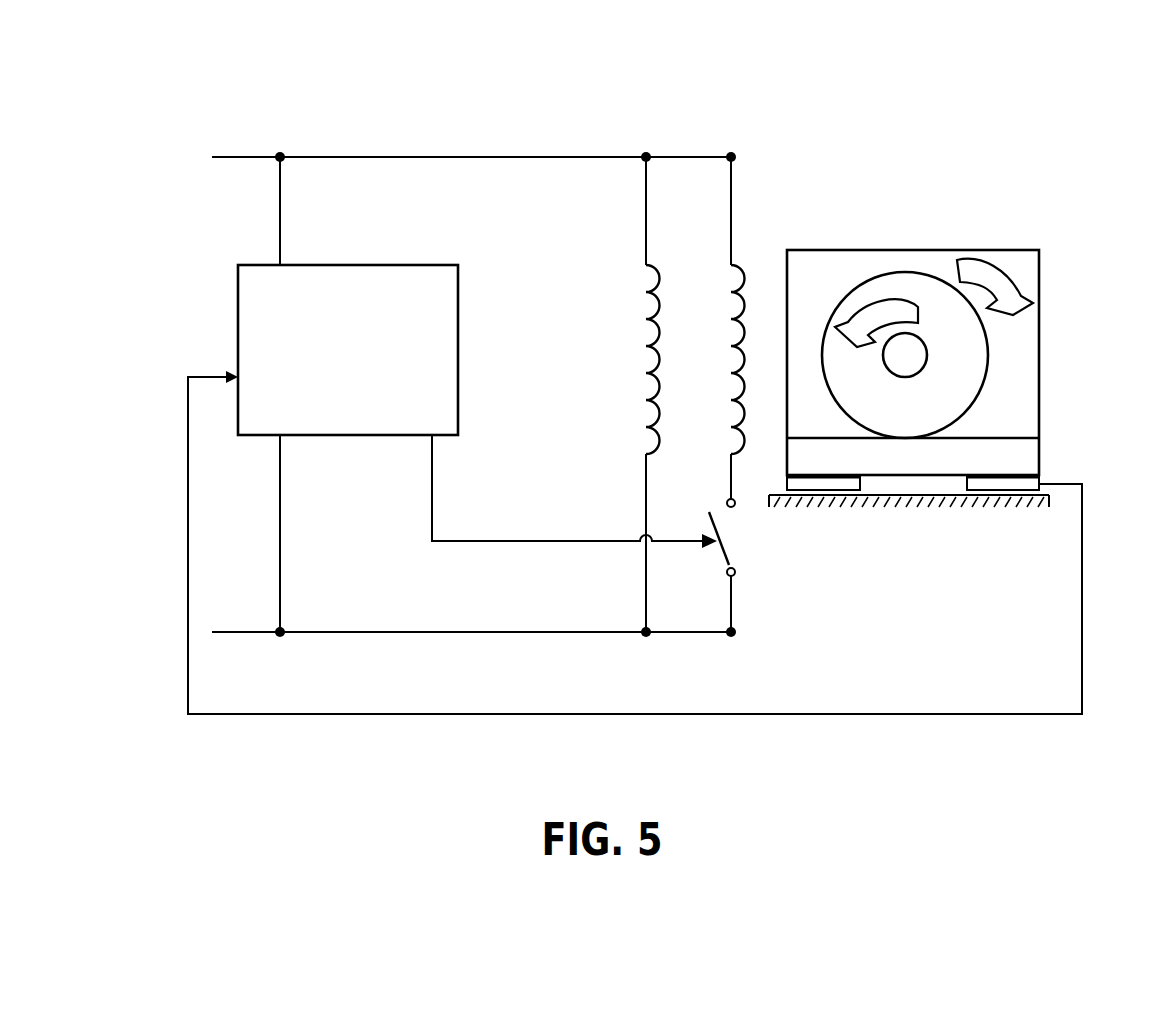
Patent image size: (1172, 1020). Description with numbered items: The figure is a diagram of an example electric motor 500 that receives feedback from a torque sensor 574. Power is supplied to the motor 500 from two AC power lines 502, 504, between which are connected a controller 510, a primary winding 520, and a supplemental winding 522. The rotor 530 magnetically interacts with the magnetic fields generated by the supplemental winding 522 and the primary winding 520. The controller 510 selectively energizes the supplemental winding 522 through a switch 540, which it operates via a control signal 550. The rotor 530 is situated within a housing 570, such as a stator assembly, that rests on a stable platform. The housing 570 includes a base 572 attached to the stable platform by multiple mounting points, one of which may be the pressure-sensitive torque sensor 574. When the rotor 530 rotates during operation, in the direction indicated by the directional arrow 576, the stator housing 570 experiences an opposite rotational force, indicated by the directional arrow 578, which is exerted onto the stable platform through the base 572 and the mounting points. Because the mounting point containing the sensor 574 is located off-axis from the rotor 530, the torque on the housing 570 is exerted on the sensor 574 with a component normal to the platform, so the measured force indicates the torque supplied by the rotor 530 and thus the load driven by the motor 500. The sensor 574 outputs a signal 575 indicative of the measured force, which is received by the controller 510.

The electric motor 500 is at (937, 52).
The AC power line 502 is at (247, 156).
The AC power line 504 is at (238, 633).
The controller 510 is at (398, 264).
The primary winding 520 is at (660, 275).
The supplemental winding 522 is at (745, 275).
The rotor 530 is at (936, 362).
The switch 540 is at (725, 550).
The control signal 550 is at (583, 543).
The housing 570 is at (1039, 335).
The base 572 is at (949, 469).
The torque sensor 574 is at (1013, 468).
The signal 575 is at (1082, 568).
The directional arrow 576 is at (867, 300).
The directional arrow 578 is at (1005, 265).